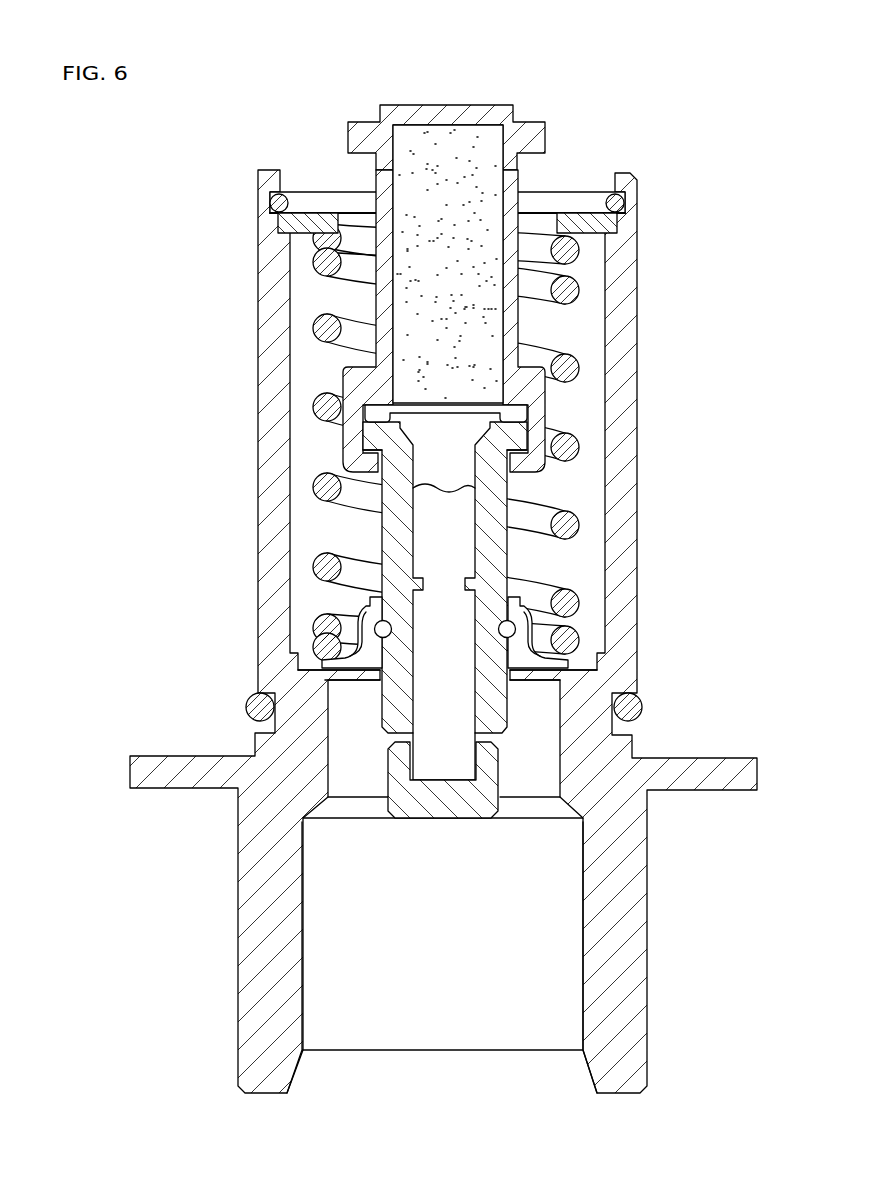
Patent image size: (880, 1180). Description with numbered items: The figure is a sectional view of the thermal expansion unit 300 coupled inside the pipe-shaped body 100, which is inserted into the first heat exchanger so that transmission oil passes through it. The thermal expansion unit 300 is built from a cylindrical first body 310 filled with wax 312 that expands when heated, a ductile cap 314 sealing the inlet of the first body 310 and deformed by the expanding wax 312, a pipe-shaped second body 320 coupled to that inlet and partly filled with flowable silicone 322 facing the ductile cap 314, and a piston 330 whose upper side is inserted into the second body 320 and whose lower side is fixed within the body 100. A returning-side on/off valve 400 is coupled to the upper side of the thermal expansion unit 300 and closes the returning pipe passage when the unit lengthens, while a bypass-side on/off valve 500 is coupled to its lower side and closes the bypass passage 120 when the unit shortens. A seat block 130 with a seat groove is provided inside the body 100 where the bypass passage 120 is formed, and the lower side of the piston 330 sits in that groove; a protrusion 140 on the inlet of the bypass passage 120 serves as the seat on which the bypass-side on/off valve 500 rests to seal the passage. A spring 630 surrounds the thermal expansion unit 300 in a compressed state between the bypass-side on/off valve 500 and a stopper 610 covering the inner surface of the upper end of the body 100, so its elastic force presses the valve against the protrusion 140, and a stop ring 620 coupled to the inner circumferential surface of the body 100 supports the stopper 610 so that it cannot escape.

The body 100 is at (258, 458).
The bypass passage 120 is at (522, 962).
The seat block 130 is at (455, 803).
The protrusion 140 is at (335, 711).
The thermal expansion unit 300 is at (730, 322).
The first body 310 is at (507, 320).
The wax 312 is at (428, 176).
The ductile cap 314 is at (468, 385).
The second body 320 is at (485, 498).
The flowable silicone 322 is at (467, 430).
The piston 330 is at (452, 613).
The returning-side on/off valve 400 is at (540, 133).
The bypass-side on/off valve 500 is at (548, 660).
The stopper 610 is at (607, 222).
The stop ring 620 is at (622, 197).
The spring 630 is at (315, 326).